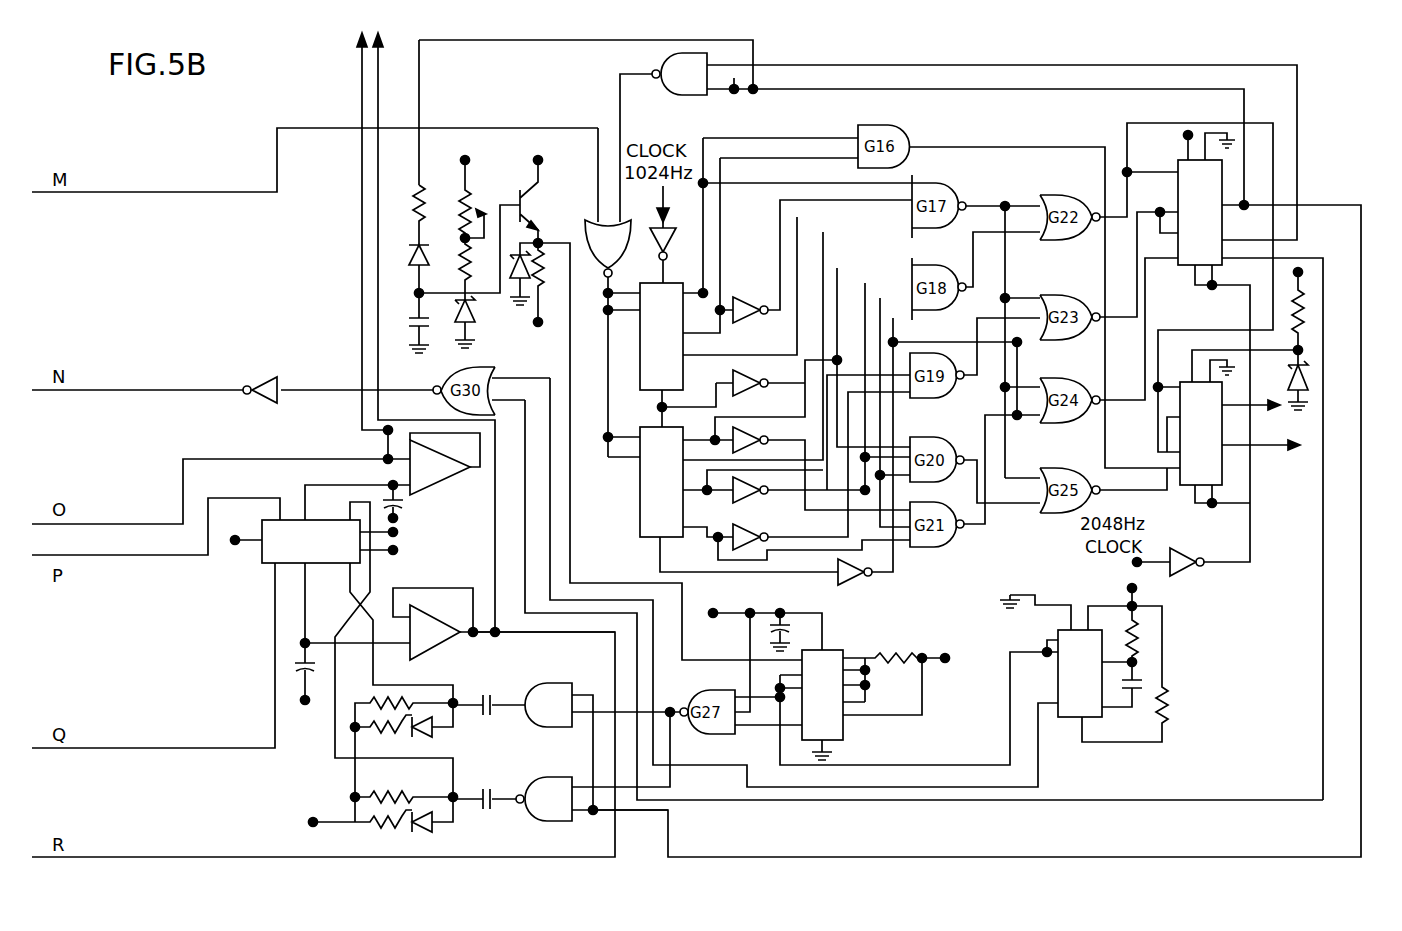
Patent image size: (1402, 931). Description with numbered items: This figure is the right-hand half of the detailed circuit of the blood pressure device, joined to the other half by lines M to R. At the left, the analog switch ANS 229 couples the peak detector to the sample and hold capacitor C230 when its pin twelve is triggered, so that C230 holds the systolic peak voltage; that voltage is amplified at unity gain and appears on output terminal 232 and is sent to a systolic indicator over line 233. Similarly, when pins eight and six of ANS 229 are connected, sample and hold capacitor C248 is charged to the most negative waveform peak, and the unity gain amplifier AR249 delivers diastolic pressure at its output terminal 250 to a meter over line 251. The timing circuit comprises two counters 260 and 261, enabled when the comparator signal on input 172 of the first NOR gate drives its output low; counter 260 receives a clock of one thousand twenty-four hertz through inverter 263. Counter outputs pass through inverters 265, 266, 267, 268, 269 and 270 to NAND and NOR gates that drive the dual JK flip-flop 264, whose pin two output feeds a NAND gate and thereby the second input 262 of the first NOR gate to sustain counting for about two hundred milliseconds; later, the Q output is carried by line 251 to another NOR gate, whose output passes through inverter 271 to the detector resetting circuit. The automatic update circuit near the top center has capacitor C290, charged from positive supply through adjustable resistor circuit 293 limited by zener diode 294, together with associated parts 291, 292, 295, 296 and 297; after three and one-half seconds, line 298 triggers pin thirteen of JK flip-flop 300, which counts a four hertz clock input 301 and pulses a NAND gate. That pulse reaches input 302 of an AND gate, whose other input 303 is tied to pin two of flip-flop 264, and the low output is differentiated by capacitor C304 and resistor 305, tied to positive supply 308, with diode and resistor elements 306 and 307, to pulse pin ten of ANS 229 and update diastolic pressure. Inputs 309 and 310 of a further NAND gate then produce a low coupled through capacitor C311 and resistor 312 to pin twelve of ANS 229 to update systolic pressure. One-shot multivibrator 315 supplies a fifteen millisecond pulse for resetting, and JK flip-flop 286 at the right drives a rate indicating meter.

The input of NOR gate G15 172 is at (598, 160).
The analog switch ANS 229 is at (262, 563).
The output terminal of amplifier AR231 232 is at (439, 470).
The line 233 is at (362, 156).
The output terminal of amplifier AR249 250 is at (478, 637).
The line 251 is at (378, 176).
The integrated circuit counter 260 is at (640, 376).
The integrated circuit counter 261 is at (640, 503).
The input of NOR gate G15 262 is at (622, 119).
The inverter 263 is at (664, 240).
The dual JK flip-flop 264 is at (1186, 272).
The inverter 265 is at (748, 305).
The inverter 266 is at (742, 376).
The inverter 267 is at (748, 438).
The inverter 268 is at (745, 495).
The inverter 269 is at (752, 532).
The inverter 270 is at (850, 580).
The inverter 271 is at (268, 376).
The JK flip-flop 286 is at (1193, 490).
The diode 291 is at (409, 255).
The resistor 292 is at (445, 190).
The adjustable resistor circuit 293 is at (462, 200).
The zener diode 294 is at (476, 316).
The transistor 295 is at (530, 205).
The zener diode 296 is at (520, 300).
The gate G15 output 297 is at (605, 338).
The line 298 is at (571, 386).
The JK flip-flop 300 is at (843, 732).
The 4 Hz clock input 301 is at (744, 613).
The input of AND gate G28 302 is at (574, 718).
The input of AND gate G28 303 is at (583, 690).
The resistor 305 is at (378, 700).
The resistor 306 is at (382, 738).
The diode 307 is at (421, 736).
The positive supply 308 is at (373, 793).
The input of NAND gate G29 309 is at (575, 782).
The input of NAND gate G29 310 is at (574, 814).
The resistor 312 is at (372, 818).
The one-shot multivibrator 315 is at (1072, 720).
The sample and hold capacitor C230 is at (405, 514).
The sample and hold capacitor C248 is at (290, 668).
The capacitor C290 is at (409, 322).
The capacitor C304 is at (488, 717).
The capacitor C311 is at (487, 812).
The unity gain amplifier AR249 is at (504, 633).